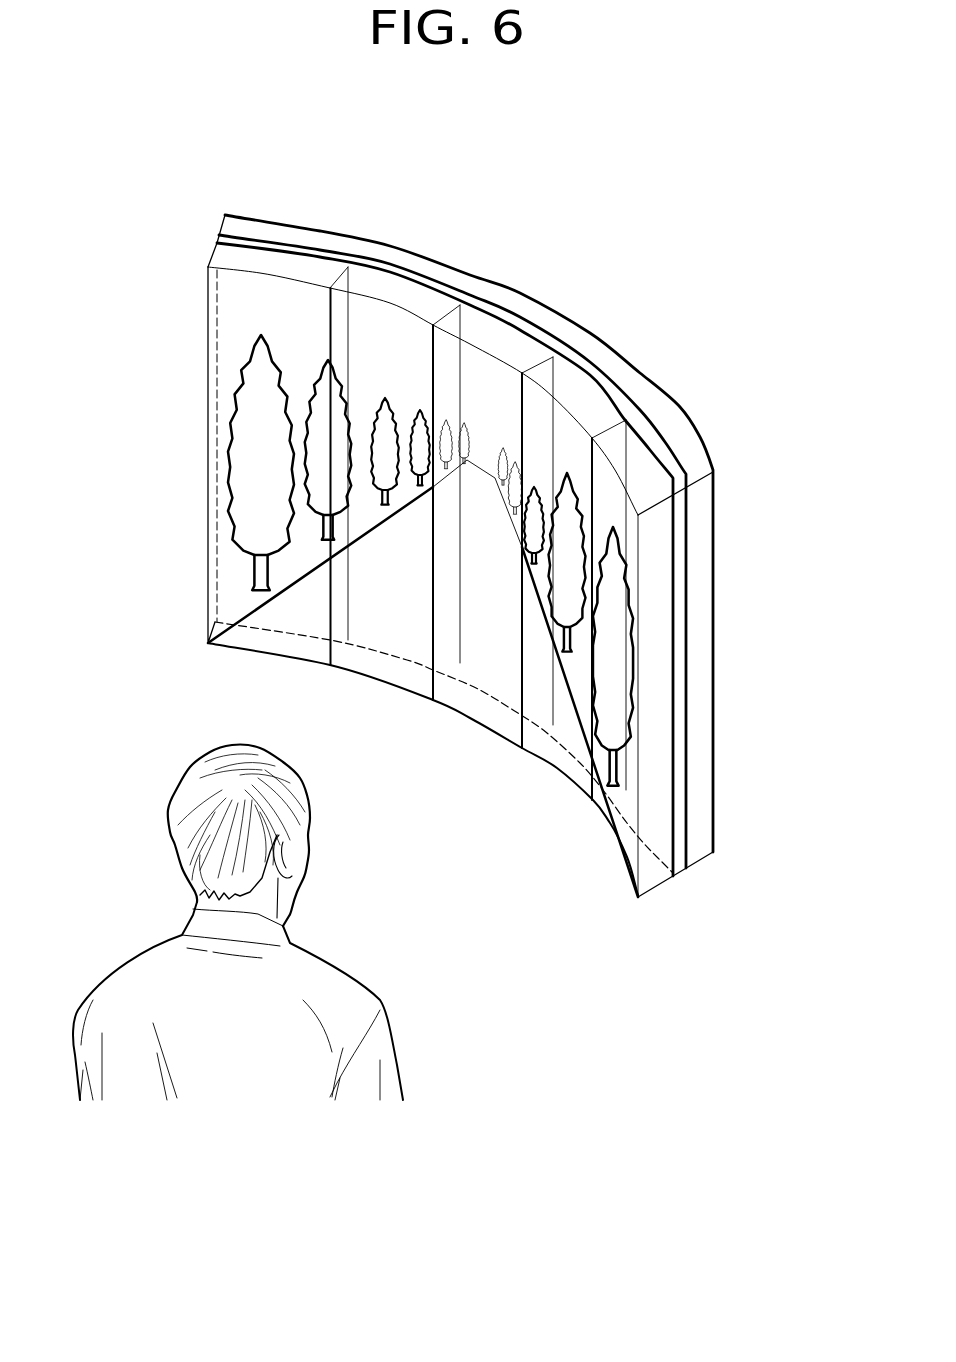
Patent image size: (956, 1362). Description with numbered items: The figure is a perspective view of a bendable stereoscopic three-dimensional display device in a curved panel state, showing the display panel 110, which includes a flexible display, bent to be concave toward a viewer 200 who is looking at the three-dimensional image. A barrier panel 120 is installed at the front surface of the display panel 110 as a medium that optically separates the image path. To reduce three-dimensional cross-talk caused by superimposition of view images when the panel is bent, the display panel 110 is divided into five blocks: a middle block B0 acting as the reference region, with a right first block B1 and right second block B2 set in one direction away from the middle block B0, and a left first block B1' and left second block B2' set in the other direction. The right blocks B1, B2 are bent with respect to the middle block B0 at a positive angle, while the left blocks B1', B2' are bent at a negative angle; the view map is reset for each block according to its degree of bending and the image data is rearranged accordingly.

The display panel 110 is at (707, 593).
The barrier panel 120 is at (682, 675).
The viewer 200 is at (350, 982).
The middle block B0 is at (477, 710).
The right first block B1 is at (570, 626).
The right second block B2 is at (600, 706).
The left first block B1' is at (367, 507).
The left second block B2' is at (251, 492).